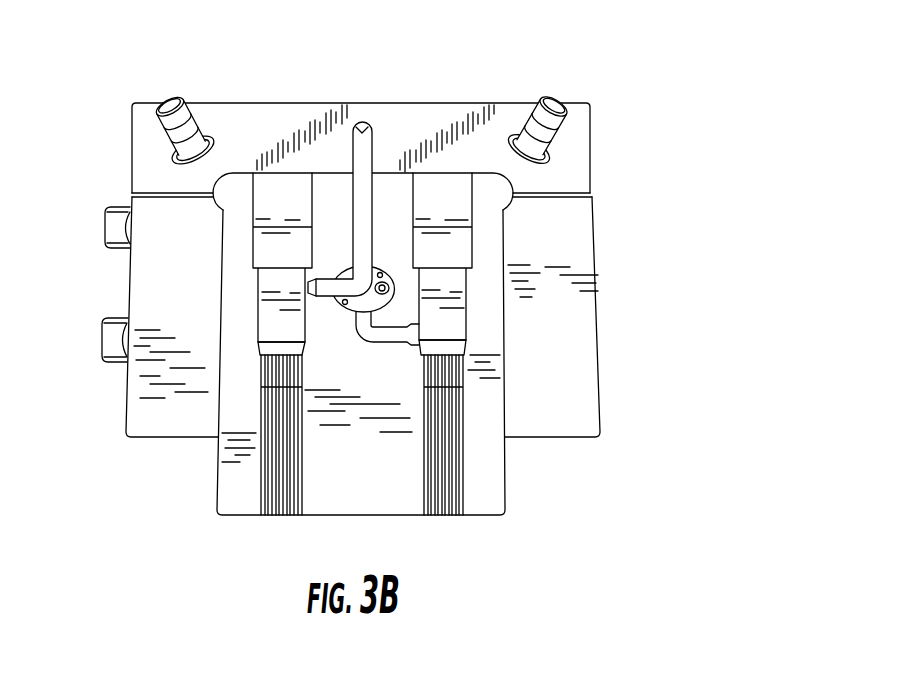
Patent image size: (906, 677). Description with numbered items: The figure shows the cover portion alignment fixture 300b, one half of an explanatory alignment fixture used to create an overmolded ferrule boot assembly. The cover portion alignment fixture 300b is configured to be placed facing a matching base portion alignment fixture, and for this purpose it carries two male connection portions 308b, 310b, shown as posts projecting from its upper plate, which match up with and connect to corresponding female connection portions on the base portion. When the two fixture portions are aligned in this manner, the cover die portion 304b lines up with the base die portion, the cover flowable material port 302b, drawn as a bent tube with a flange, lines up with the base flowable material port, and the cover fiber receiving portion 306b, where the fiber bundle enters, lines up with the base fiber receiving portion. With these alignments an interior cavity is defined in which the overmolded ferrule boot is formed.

The cover portion alignment fixture 300b is at (608, 188).
The cover flowable material port 302b is at (371, 190).
The cover die portion 304b is at (480, 324).
The cover fiber receiving portion 306b is at (478, 476).
The male connection portion 308b is at (160, 146).
The male connection portion 310b is at (560, 88).